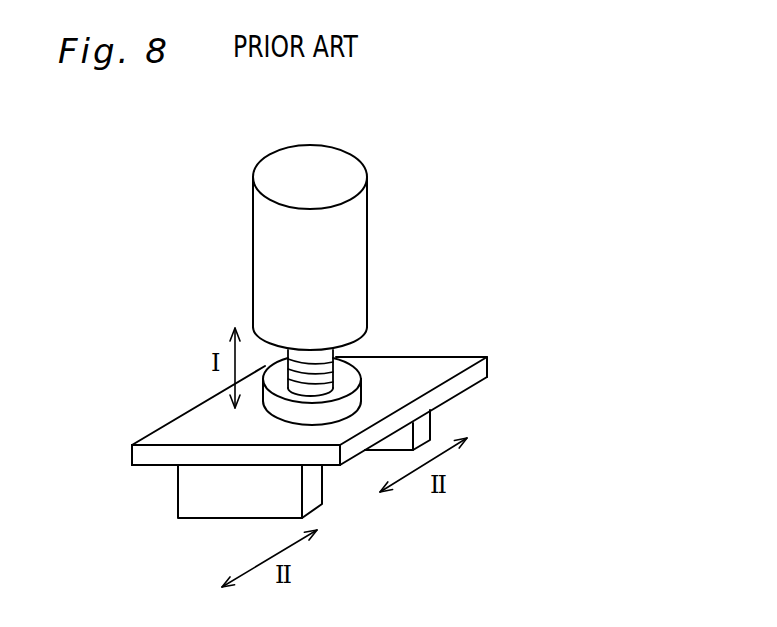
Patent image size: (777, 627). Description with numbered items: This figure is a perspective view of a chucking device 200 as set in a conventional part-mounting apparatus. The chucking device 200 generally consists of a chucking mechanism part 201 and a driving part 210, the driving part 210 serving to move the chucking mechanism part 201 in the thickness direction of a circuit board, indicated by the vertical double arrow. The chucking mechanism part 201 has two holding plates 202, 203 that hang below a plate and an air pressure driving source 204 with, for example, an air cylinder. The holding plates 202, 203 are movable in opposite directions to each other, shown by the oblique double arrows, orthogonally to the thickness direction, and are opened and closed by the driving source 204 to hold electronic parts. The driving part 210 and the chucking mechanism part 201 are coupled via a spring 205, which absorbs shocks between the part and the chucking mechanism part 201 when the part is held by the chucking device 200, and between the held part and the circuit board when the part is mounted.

The chucking device 200 is at (563, 455).
The chucking mechanism part 201 is at (512, 362).
The holding plate 202 is at (220, 520).
The holding plate 203 is at (430, 423).
The air pressure driving source 204 is at (135, 455).
The spring 205 is at (343, 360).
The driving part 210 is at (376, 240).